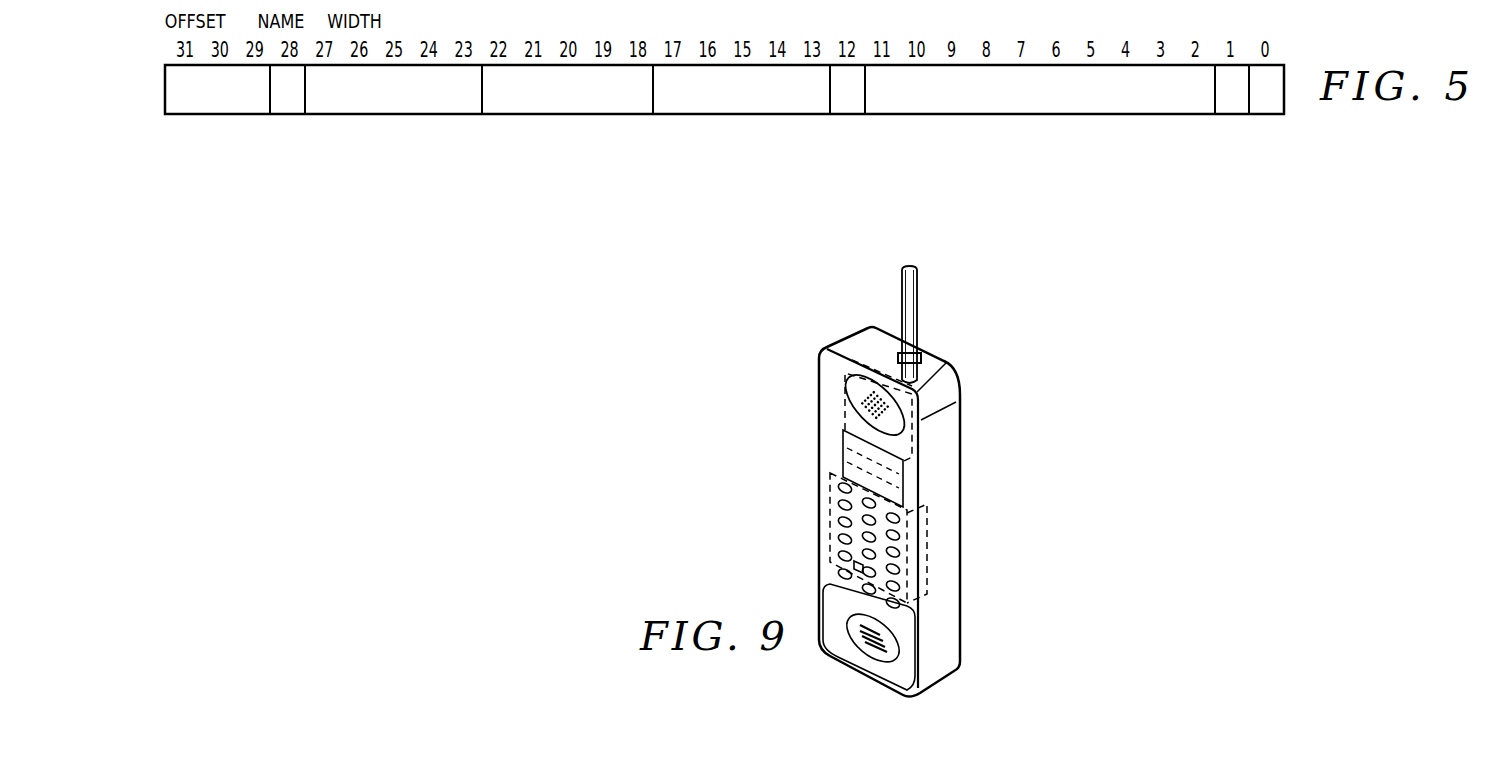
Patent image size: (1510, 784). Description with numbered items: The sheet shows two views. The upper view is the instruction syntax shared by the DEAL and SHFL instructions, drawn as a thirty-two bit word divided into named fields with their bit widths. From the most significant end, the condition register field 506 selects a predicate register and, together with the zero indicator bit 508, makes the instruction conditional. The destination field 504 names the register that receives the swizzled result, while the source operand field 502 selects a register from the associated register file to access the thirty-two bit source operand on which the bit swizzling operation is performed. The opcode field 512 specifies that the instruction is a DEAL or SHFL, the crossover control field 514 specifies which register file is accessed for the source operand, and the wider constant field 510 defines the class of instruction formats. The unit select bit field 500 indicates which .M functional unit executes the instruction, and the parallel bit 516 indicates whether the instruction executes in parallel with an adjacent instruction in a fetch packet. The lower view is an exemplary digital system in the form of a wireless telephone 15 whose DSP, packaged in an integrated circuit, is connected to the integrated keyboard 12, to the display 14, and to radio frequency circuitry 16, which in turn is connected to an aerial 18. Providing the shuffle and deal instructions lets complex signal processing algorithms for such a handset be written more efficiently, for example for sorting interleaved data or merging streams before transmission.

In FIG. 5, the condition register field 506 is at (190, 113).
In FIG. 5, the zero indicator bit 508 is at (268, 134).
In FIG. 5, the destination field 504 is at (352, 134).
In FIG. 5, the source operand field 502 is at (510, 134).
In FIG. 5, the opcode field 512 is at (678, 134).
In FIG. 5, the crossover control field 514 is at (856, 112).
In FIG. 5, the instruction format class field 510 is at (1108, 112).
In FIG. 5, the unit select bit field 500 is at (1206, 137).
In FIG. 5, the parallel bit 516 is at (1275, 112).
In FIG. 9, the aerial 18 is at (912, 303).
In FIG. 9, the radio frequency circuitry 16 is at (802, 398).
In FIG. 9, the display 14 is at (803, 442).
In FIG. 9, the keyboard 12 is at (800, 532).
In FIG. 9, the wireless telephone 15 is at (950, 615).